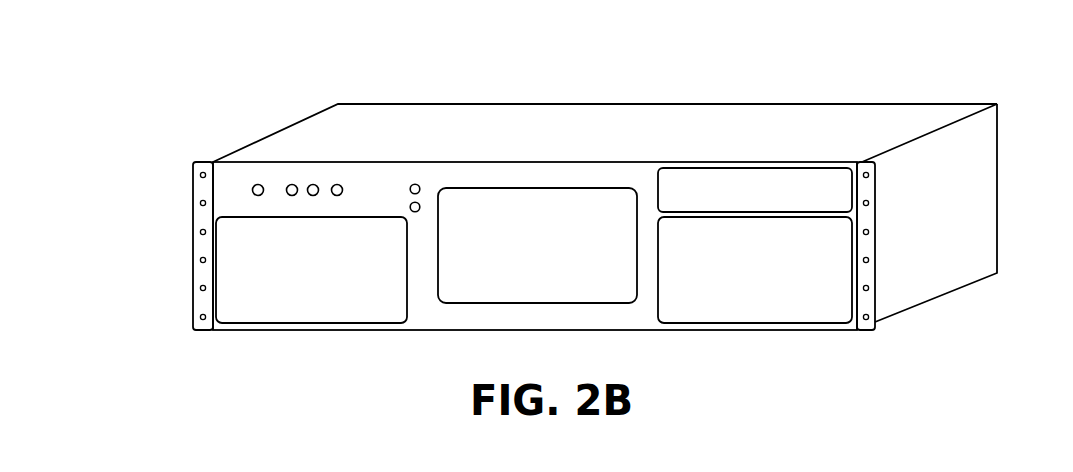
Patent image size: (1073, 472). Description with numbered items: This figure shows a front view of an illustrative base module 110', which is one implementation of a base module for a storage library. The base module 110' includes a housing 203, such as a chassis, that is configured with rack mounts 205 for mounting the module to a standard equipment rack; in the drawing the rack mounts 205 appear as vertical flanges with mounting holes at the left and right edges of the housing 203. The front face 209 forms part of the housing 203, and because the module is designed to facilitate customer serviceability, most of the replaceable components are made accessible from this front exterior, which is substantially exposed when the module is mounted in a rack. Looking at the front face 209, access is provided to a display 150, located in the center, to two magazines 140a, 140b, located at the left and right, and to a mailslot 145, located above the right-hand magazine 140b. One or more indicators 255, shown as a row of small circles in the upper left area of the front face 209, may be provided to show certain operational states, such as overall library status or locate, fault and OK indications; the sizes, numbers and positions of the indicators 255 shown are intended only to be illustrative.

The base module 110' is at (549, 169).
The housing 203 is at (310, 120).
The rack mounts 205 is at (193, 217).
The front face 209 is at (606, 181).
The indicators 255 is at (334, 184).
The magazine 140a is at (335, 296).
The magazine 140b is at (755, 270).
The display 150 is at (553, 271).
The mailslot 145 is at (822, 201).